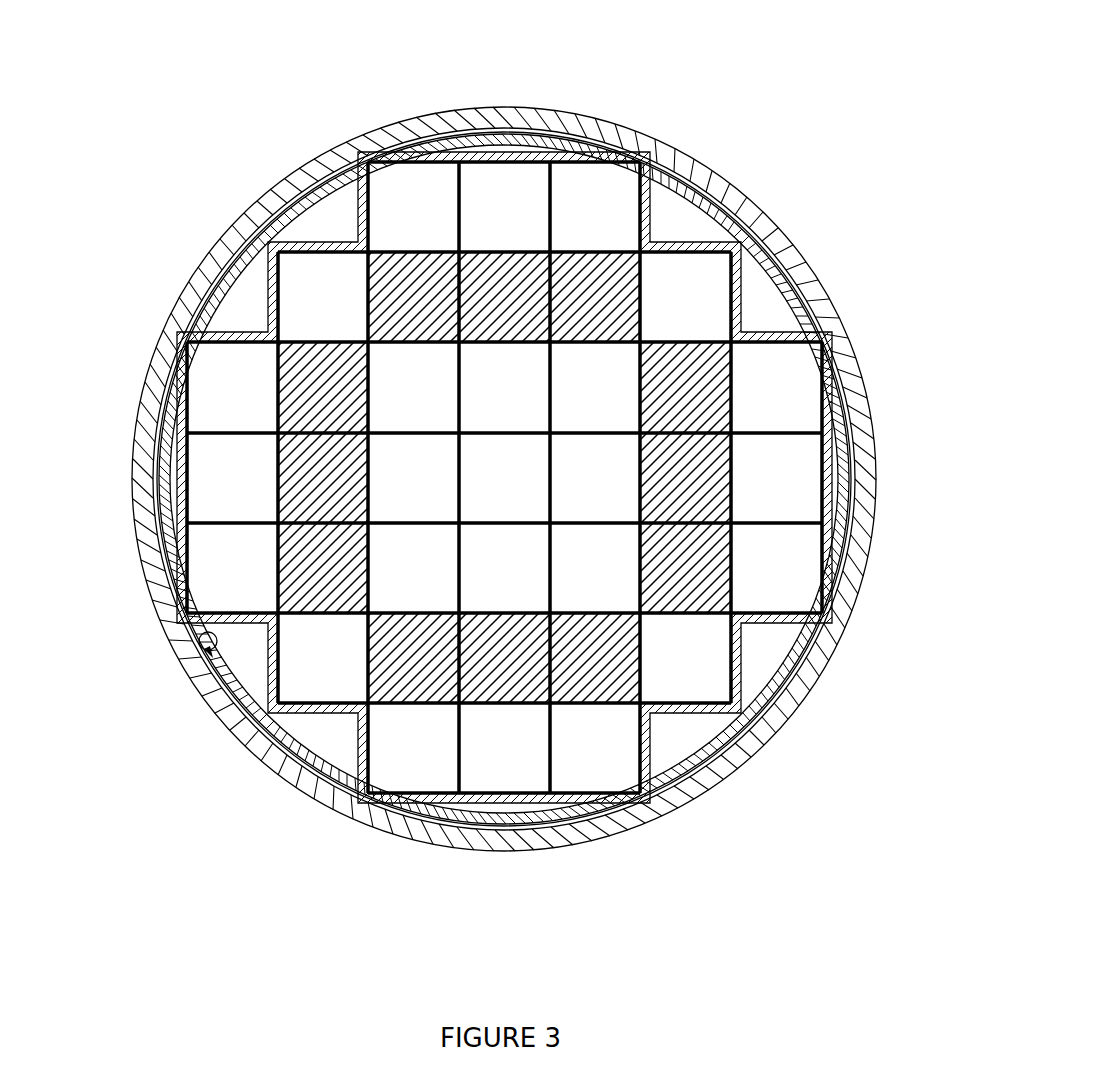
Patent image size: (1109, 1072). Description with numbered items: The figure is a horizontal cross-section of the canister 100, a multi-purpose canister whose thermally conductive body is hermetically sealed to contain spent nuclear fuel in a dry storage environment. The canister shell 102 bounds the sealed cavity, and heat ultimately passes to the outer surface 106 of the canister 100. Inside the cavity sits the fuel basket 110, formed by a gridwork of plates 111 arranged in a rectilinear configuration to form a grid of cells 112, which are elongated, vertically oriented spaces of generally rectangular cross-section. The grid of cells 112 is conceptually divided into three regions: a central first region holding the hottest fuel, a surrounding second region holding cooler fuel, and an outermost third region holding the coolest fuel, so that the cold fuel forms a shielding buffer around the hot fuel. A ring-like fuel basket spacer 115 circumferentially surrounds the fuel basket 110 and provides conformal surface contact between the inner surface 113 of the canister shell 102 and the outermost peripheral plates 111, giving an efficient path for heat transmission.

The canister 100 is at (745, 55).
The canister shell 102 is at (742, 726).
The outer surface 106 is at (136, 470).
The fuel basket 110 is at (740, 370).
The plates 111 is at (805, 515).
The cells 112 is at (330, 268).
The inner surface 113 is at (199, 642).
The fuel basket spacer 115 is at (702, 180).